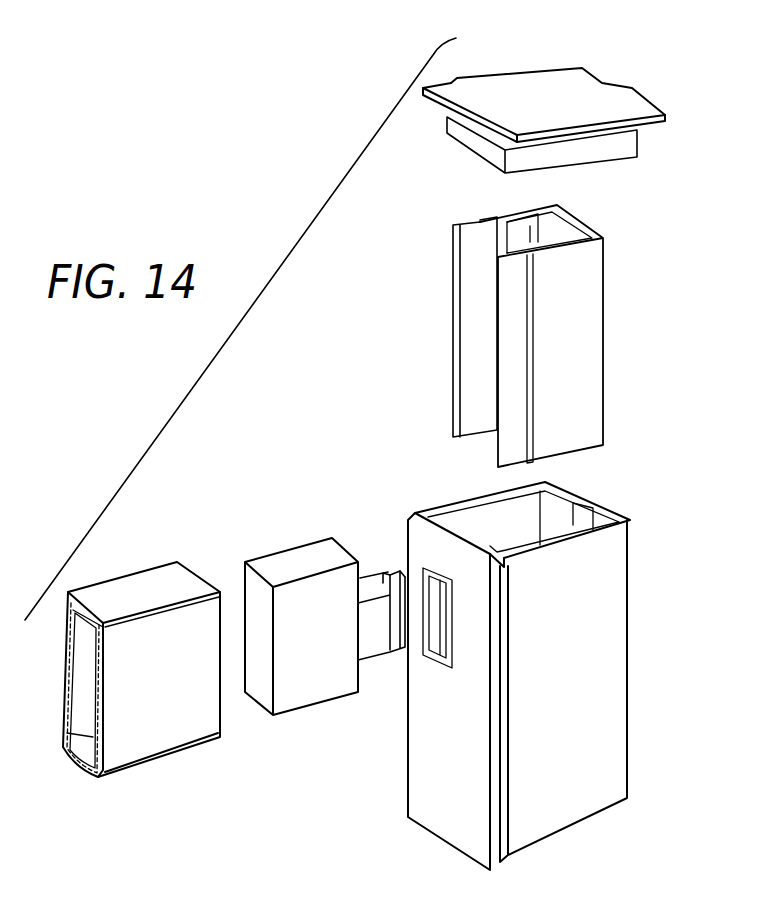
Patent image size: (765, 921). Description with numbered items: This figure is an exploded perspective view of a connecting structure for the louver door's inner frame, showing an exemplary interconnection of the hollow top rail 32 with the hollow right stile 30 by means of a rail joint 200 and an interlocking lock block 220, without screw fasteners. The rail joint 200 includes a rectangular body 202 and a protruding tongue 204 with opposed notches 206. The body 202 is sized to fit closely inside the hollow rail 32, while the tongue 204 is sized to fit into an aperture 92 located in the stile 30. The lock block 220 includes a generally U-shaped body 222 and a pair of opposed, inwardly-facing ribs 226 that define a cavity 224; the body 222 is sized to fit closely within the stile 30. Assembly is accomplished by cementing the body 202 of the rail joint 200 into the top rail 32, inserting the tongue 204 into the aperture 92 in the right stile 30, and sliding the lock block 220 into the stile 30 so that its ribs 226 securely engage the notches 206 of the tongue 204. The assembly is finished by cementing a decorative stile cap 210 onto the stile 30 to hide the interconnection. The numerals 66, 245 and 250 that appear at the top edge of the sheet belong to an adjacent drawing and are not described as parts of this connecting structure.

The right vertical stile 30 is at (630, 613).
The top horizontal rail 32 is at (137, 587).
The stray numeral 66 is at (32, 2).
The aperture 92 is at (442, 673).
The rail joint 200 is at (292, 545).
The rectangular body 202 is at (307, 677).
The protruding tongue 204 is at (378, 643).
The opposed notches 206 is at (400, 568).
The stile cap 210 is at (547, 80).
The lock block 220 is at (615, 343).
The U-shaped body 222 is at (580, 223).
The cavity 224 is at (560, 220).
The inwardly-facing ribs 226 is at (510, 220).
The stray numeral 245 is at (80, 10).
The stray numeral 250 is at (185, 10).